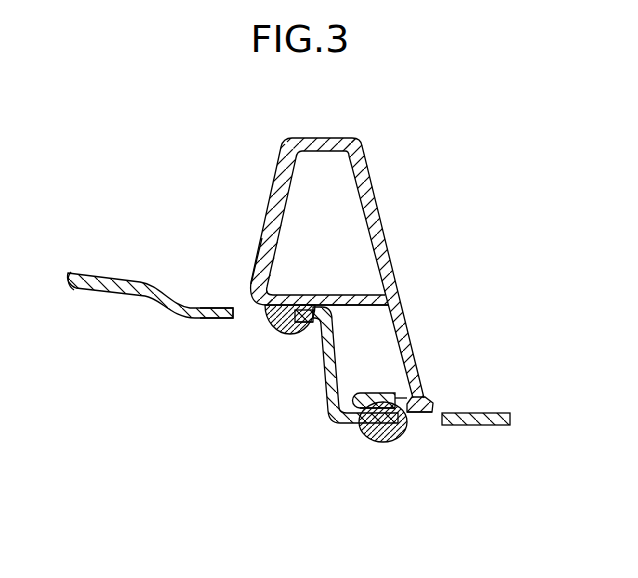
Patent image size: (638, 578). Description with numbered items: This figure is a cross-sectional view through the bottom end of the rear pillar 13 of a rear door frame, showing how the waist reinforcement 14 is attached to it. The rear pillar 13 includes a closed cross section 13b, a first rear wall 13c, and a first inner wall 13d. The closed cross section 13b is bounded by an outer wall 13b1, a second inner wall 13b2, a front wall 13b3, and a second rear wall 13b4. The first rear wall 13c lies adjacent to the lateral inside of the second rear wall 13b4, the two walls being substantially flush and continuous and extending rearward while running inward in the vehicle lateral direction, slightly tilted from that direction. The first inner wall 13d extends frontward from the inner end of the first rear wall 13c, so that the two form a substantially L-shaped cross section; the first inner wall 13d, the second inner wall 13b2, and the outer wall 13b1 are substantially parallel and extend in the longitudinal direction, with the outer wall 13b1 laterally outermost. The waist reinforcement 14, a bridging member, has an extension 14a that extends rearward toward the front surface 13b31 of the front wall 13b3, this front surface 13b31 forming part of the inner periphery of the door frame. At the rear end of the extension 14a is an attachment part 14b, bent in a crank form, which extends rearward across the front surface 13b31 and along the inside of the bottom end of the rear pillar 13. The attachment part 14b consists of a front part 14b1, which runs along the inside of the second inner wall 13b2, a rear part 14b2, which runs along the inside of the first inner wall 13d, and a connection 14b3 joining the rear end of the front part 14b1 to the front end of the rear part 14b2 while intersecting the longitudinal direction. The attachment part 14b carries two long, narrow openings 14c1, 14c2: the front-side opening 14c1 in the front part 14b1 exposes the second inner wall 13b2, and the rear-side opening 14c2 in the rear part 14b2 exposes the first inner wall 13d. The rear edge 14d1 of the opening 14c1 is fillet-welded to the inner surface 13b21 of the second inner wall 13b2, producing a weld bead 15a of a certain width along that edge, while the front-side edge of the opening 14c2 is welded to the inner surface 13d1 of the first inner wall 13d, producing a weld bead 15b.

The rear pillar 13 is at (336, 301).
The closed cross section 13b is at (336, 241).
The outer wall 13b1 is at (322, 139).
The second inner wall 13b2 is at (388, 292).
The inner surface 13b21 is at (386, 306).
The front wall 13b3 is at (269, 193).
The front surface 13b31 is at (260, 238).
The second rear wall 13b4 is at (385, 240).
The first rear wall 13c is at (412, 366).
The first inner wall 13d is at (432, 403).
The inner surface 13d1 is at (428, 413).
The waist reinforcement 14 is at (296, 374).
The extension 14a is at (73, 290).
The attachment part 14b is at (388, 426).
The front part 14b1 is at (220, 310).
The rear part 14b2 is at (392, 442).
The connection 14b3 is at (322, 384).
The opening 14c1 is at (223, 376).
The opening 14c2 is at (354, 476).
The edge 14d1 is at (266, 323).
The weld bead 15a is at (286, 337).
The weld bead 15b is at (398, 442).